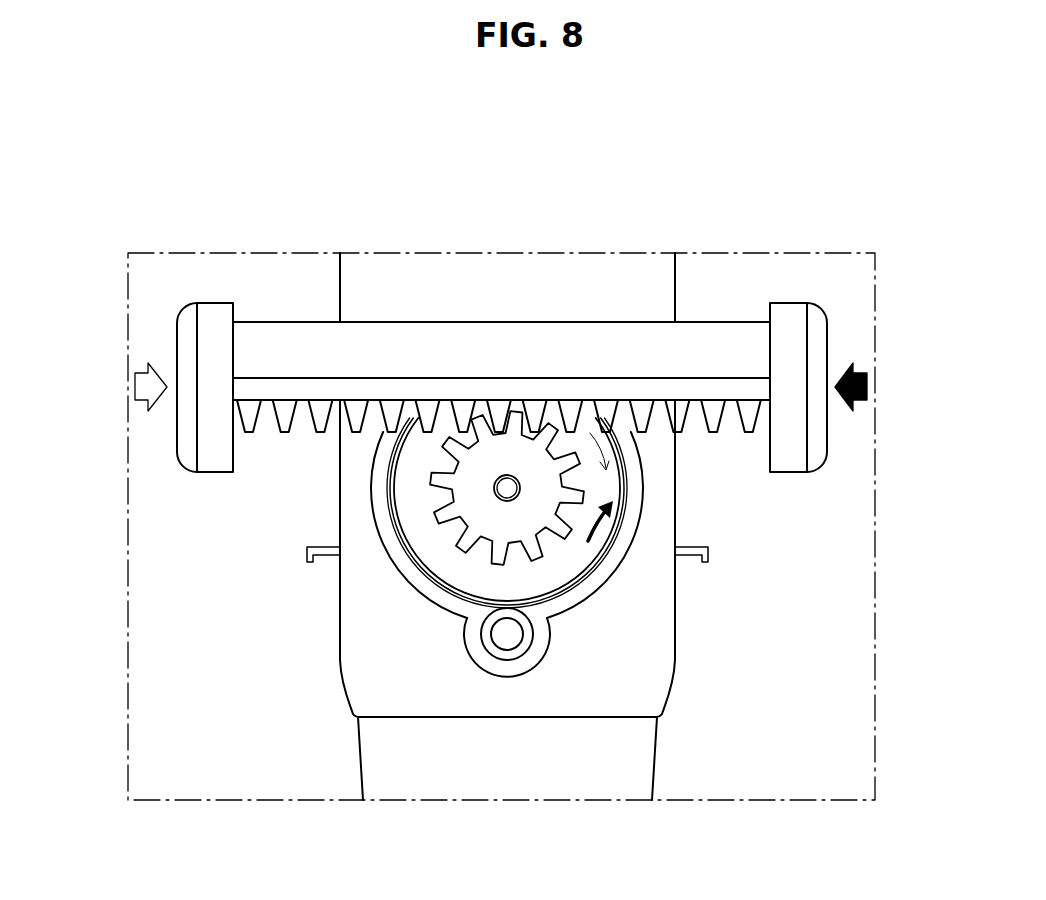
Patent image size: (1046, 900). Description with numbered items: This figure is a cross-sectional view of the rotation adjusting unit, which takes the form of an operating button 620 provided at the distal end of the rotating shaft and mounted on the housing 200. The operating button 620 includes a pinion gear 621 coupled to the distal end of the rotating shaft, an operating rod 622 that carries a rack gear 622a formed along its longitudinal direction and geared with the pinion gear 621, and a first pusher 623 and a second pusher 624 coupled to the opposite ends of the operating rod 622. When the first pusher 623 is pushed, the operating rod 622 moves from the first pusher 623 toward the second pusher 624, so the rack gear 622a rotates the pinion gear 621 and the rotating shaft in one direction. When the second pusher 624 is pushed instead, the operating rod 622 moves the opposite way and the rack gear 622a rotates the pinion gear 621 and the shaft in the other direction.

The housing / main body 200 is at (705, 677).
The operating button 620 is at (155, 290).
The pinion gear 621 is at (567, 500).
The operating rod 622 is at (502, 337).
The rack gear 622a is at (660, 427).
The first pusher 623 is at (810, 378).
The second pusher 624 is at (190, 380).